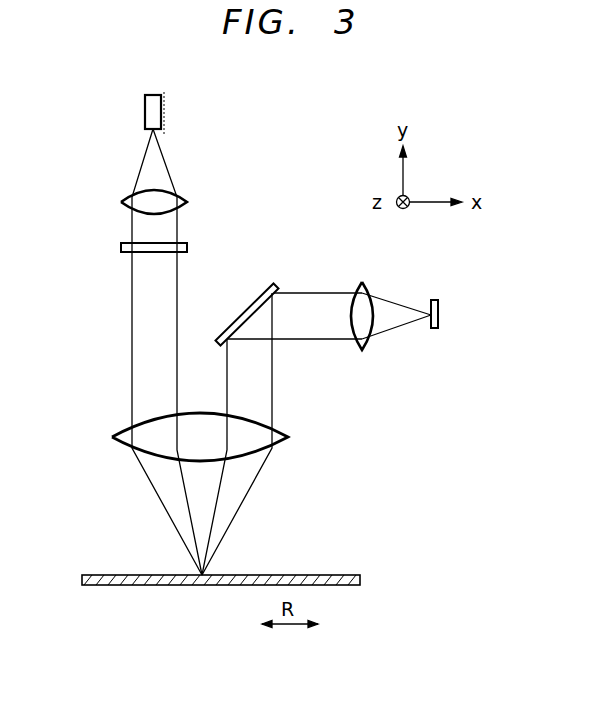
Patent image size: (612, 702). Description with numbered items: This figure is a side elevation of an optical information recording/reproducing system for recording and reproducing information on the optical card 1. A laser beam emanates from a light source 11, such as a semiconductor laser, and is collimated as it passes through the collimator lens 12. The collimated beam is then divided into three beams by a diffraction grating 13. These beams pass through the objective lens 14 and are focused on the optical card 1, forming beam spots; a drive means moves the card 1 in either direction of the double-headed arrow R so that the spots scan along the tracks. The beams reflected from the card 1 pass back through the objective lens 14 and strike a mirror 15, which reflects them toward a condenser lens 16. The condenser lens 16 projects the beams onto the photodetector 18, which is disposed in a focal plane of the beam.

The optical card 1 is at (348, 573).
The light source 11 is at (163, 114).
The collimator lens 12 is at (187, 199).
The diffraction grating 13 is at (189, 246).
The objective lens 14 is at (290, 434).
The mirror 15 is at (270, 287).
The condenser lens 16 is at (364, 288).
The photodetector 18 is at (434, 300).